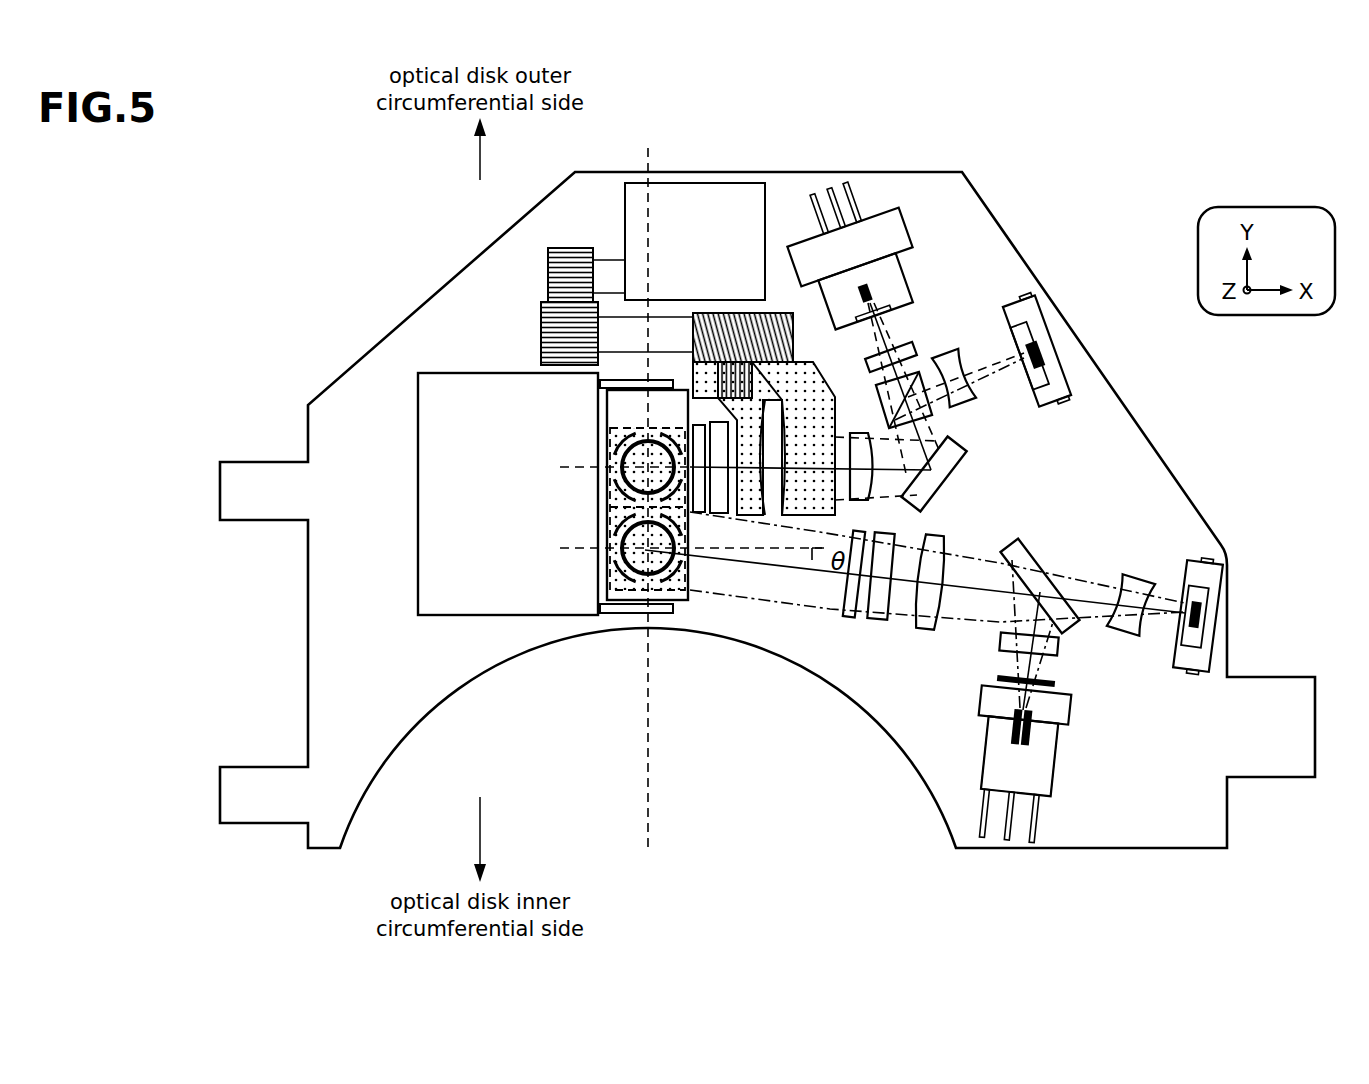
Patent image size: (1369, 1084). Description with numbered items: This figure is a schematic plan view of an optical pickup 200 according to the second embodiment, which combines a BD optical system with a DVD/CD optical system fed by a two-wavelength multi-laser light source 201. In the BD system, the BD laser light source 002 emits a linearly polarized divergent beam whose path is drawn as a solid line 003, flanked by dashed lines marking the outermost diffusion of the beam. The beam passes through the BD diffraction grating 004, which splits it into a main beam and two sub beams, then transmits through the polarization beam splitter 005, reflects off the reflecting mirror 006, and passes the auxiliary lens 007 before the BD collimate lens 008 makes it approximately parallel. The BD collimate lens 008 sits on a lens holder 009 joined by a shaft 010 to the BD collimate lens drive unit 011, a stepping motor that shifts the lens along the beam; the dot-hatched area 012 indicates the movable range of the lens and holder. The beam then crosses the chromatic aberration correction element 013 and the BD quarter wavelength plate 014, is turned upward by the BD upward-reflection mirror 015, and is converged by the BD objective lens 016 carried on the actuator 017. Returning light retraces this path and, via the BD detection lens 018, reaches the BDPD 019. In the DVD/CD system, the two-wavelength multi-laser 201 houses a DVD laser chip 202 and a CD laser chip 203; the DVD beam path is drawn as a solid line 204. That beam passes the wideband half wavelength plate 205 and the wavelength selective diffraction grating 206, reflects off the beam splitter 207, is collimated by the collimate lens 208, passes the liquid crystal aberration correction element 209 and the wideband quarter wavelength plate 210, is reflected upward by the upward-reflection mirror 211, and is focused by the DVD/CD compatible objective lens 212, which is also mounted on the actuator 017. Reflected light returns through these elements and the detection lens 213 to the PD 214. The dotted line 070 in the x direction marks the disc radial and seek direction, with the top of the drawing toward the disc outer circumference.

The optical pickup 200 is at (430, 330).
The dotted line 070 is at (652, 748).
The BD collimate lens drive unit 011 is at (686, 203).
The shaft 010 is at (600, 337).
The area hatched with dots 012 is at (785, 378).
The lens holder 009 is at (765, 387).
The BD collimate lens 008 is at (781, 462).
The chromatic aberration correction element 013 is at (721, 515).
The BD quarter wavelength plate 014 is at (699, 515).
The actuator 017 is at (432, 530).
The BD upward-reflection mirror 015 is at (610, 432).
The upward-reflection mirror 211 is at (613, 594).
The BD objective lens 016 is at (633, 485).
The DVD/CD compatible objective lens 212 is at (642, 553).
The BD laser light source 002 is at (890, 237).
The solid line 003 is at (880, 332).
The polarization beam splitter 005 is at (928, 405).
The BD diffraction grating 004 is at (935, 352).
The BDPD 019 is at (1035, 317).
The BD detection lens 018 is at (980, 390).
The reflecting mirror 006 is at (955, 465).
The auxiliary lens 007 is at (862, 502).
The wideband quarter wavelength plate 210 is at (846, 620).
The liquid crystal aberration correction element 209 is at (878, 620).
The collimate lens 208 is at (926, 633).
The beam splitter 207 is at (1025, 552).
The detection lens 213 is at (1130, 572).
The PD 214 is at (1214, 590).
The wavelength selective diffraction grating 206 is at (1060, 645).
The wideband half wavelength plate 205 is at (1058, 683).
The solid line 204 is at (1018, 666).
The two-wavelength multi-laser light source 201 is at (1030, 778).
The DVD laser chip 202 is at (1035, 730).
The CD laser chip 203 is at (985, 724).